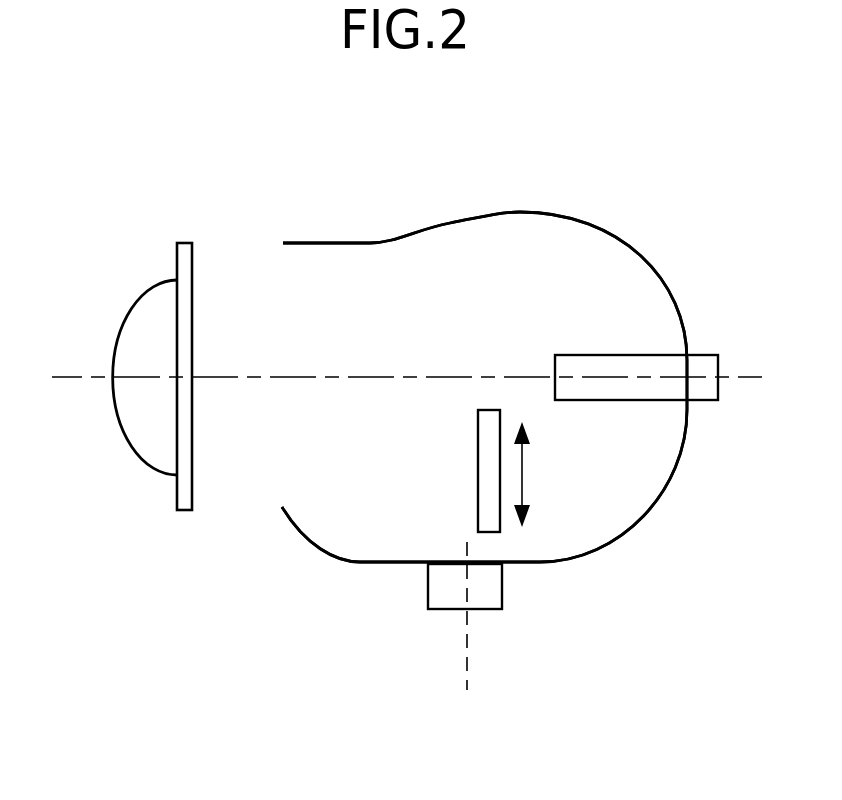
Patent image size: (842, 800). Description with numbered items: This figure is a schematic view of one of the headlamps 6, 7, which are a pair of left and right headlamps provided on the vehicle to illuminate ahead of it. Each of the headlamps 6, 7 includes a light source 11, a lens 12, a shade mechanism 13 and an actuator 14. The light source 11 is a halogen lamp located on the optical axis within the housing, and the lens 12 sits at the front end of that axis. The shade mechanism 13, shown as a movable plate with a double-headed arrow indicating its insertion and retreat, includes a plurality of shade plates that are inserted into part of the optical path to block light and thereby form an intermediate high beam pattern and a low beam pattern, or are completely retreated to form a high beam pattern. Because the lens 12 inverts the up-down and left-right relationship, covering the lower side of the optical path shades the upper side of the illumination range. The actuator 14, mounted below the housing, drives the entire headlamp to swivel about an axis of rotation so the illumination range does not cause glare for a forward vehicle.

The headlamp 6 is at (228, 168).
The headlamp 7 is at (211, 135).
The light source 11 is at (634, 363).
The lens 12 is at (155, 307).
The shade mechanism 13 is at (488, 492).
The actuator 14 is at (490, 590).